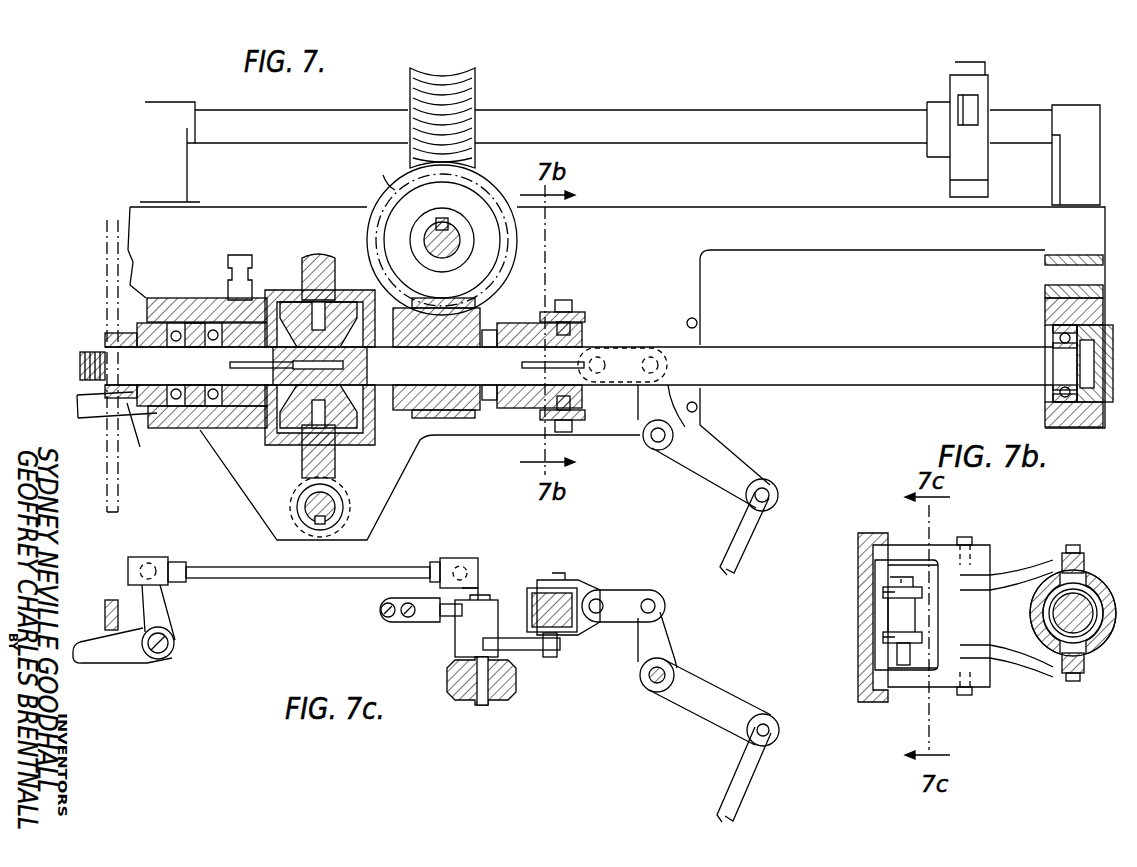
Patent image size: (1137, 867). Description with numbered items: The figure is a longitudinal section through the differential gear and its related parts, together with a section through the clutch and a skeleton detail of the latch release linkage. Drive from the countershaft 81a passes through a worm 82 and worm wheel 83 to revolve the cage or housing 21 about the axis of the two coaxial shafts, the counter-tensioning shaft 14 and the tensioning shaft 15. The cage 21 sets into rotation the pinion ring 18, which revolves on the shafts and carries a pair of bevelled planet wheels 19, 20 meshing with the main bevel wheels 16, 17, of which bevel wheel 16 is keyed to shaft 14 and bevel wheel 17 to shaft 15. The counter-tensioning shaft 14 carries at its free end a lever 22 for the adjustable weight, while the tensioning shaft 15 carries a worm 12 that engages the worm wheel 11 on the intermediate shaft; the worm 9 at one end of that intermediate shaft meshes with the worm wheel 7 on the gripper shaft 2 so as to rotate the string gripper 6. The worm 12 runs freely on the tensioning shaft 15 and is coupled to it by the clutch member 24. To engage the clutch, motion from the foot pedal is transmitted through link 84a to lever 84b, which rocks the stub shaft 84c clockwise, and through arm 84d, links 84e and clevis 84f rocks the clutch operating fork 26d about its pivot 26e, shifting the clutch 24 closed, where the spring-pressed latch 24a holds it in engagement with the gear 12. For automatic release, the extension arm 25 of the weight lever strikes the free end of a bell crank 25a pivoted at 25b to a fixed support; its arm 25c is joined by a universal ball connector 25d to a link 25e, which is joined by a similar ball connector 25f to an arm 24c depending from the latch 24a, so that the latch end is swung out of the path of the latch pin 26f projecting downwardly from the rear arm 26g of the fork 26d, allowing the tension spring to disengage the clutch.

In FIG. 7, the gripper shaft 2 is at (687, 116).
In FIG. 7, the string gripper 6 is at (990, 105).
In FIG. 7, the worm wheel 7 is at (440, 92).
In FIG. 7, the worm 9 is at (377, 197).
In FIG. 7, the worm wheel 11 is at (378, 171).
In FIG. 7, the worm 12 is at (463, 418).
In FIG. 7, the counter-tensioning shaft 14 is at (312, 365).
In FIG. 7, the tensioning shaft 15 is at (737, 366).
In FIG. 7B, the tensioning shaft 15 is at (1058, 635).
In FIG. 7, the bevel wheel 16 is at (263, 427).
In FIG. 7, the bevel wheel 17 is at (355, 420).
In FIG. 7, the pinion ring 18 is at (320, 455).
In FIG. 7, the bevelled planet wheel 19 is at (342, 300).
In FIG. 7, the bevelled planet wheel 20 is at (303, 430).
In FIG. 7, the cage or housing 21 is at (286, 300).
In FIG. 7, the lever 22 is at (145, 438).
In FIG. 7, the clutch member 24 is at (517, 408).
In FIG. 7B, the clutch member 24 is at (1040, 610).
In FIG. 7C, the spring-pressed latch 24a is at (537, 652).
In FIG. 7C, the arm 24c is at (467, 612).
In FIG. 7, the extension arm 25 is at (105, 263).
In FIG. 7C, the extension arm 25 is at (112, 631).
In FIG. 7, the bell crank 25a is at (77, 400).
In FIG. 7C, the bell crank 25a is at (143, 661).
In FIG. 7C, the pivot 25b is at (176, 643).
In FIG. 7C, the arm 25c is at (168, 600).
In FIG. 7C, the universal ball connector 25d is at (160, 557).
In FIG. 7C, the link 25e is at (313, 579).
In FIG. 7C, the ball connector 25f is at (465, 558).
In FIG. 7, the clutch operating fork 26d is at (583, 317).
In FIG. 7B, the clutch operating fork 26d is at (1032, 562).
In FIG. 7B, the pivot 26e is at (967, 537).
In FIG. 7C, the latch pin 26f is at (553, 658).
In FIG. 7B, the latch pin 26f is at (905, 666).
In FIG. 7C, the rear arm 26g is at (530, 602).
In FIG. 7B, the rear arm 26g is at (924, 610).
In FIG. 7, the countershaft 81a is at (307, 510).
In FIG. 7, the worm 82 is at (353, 510).
In FIG. 7, the worm wheel 83 is at (322, 252).
In FIG. 7, the link 84a is at (736, 565).
In FIG. 7C, the link 84a is at (755, 782).
In FIG. 7, the lever 84b is at (735, 467).
In FIG. 7C, the lever 84b is at (718, 702).
In FIG. 7, the stub shaft 84c is at (655, 448).
In FIG. 7C, the stub shaft 84c is at (676, 672).
In FIG. 7C, the arm 84d is at (672, 635).
In FIG. 7, the links 84e is at (622, 352).
In FIG. 7C, the links 84e is at (655, 577).
In FIG. 7C, the clevis 84f is at (588, 582).
In FIG. 7B, the clevis 84f is at (883, 637).